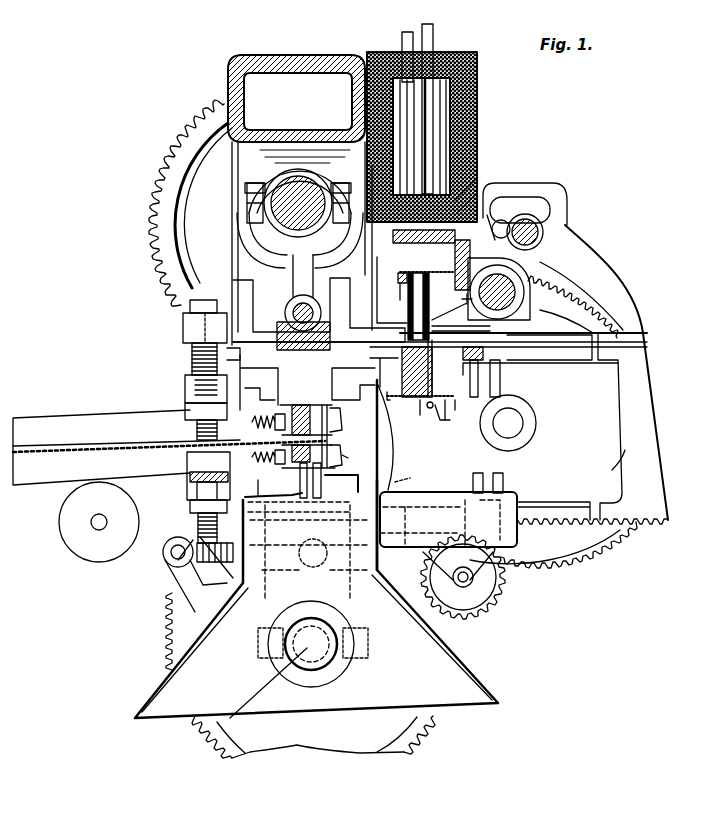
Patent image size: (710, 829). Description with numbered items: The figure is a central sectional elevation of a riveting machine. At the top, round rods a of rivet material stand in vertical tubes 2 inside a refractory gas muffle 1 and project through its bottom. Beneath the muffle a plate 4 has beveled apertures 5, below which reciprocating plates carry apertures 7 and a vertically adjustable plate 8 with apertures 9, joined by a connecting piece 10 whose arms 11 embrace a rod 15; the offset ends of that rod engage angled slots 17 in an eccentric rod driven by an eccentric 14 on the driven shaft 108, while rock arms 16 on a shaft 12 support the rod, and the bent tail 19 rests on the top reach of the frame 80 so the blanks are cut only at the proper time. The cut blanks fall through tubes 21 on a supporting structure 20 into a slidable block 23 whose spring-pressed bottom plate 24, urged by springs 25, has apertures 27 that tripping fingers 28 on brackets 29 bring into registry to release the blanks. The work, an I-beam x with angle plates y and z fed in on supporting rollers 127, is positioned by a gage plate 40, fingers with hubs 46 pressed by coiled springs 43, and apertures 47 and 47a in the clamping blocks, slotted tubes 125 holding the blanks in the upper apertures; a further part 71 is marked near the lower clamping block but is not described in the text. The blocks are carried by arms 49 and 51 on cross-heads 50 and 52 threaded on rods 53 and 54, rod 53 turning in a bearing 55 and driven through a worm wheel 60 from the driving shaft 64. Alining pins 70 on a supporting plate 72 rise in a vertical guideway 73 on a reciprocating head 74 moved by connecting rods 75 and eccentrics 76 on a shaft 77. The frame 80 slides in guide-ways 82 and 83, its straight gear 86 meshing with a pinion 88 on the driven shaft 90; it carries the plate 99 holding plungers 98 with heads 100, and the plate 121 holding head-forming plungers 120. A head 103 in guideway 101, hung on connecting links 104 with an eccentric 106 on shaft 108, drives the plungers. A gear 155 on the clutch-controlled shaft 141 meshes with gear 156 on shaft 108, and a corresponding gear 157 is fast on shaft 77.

The gas muffle 1 is at (460, 165).
The tubes 2 is at (402, 39).
The rods a is at (440, 155).
The plate 4 is at (525, 197).
The apertures 5 is at (420, 335).
The apertures 7 is at (420, 245).
The plate 8 is at (395, 269).
The apertures 9 is at (446, 255).
The connecting piece 10 is at (452, 303).
The arms 11 is at (501, 218).
The shaft 12 is at (515, 292).
The eccentric 14 is at (240, 240).
The rod 15 is at (550, 222).
The rock arms 16 is at (530, 268).
The angled slots 17 is at (530, 200).
The tail 19 is at (630, 290).
The supporting structure 20 is at (400, 290).
The tubes 21 is at (430, 330).
The slidable block 23 is at (402, 358).
The bottom plate 24 is at (402, 419).
The springs 25 is at (415, 411).
The apertures 27 is at (442, 424).
The tripping fingers 28 is at (451, 411).
The brackets 29 is at (467, 406).
The gage plate 40 is at (355, 458).
The coiled springs 43 is at (241, 427).
The hubs 46 is at (285, 395).
The apertures 47 is at (366, 475).
The apertures 47a is at (353, 381).
The arms 49 is at (187, 482).
The cross-head 50 is at (190, 510).
The arms 51 is at (185, 385).
The cross-head 52 is at (185, 410).
The screw-threaded rod 53 is at (222, 546).
The screw-threaded rod 54 is at (192, 358).
The bearing 55 is at (183, 325).
The worm wheel 60 is at (181, 538).
The driving shaft 64 is at (165, 562).
The alining pins 70 is at (300, 490).
The spring 71 is at (331, 452).
The supporting plate 72 is at (300, 519).
The vertical guideway 73 is at (412, 478).
The reciprocating head 74 is at (300, 580).
The connecting rods 75 is at (268, 612).
The eccentrics 76 is at (250, 672).
The shaft 77 is at (230, 718).
The frame 80 is at (600, 478).
The guide-way 82 is at (192, 350).
The guide-way 83 is at (430, 500).
The straight gear 86 is at (632, 530).
The pinion 88 is at (500, 598).
The driven shaft 90 is at (470, 595).
The plungers 98 is at (500, 385).
The supporting plate 99 is at (480, 372).
The heads 100 is at (512, 335).
The guide-way 101 is at (245, 258).
The head 103 is at (285, 300).
The connecting links 104 is at (320, 262).
The eccentric 106 is at (247, 210).
The driven shaft 108 is at (270, 188).
The plungers 120 is at (503, 470).
The supporting plate 121 is at (535, 505).
The tubes 125 is at (304, 409).
The supporting rollers 127 is at (59, 531).
The shaft 141 is at (518, 430).
The gear 155 is at (545, 556).
The gear 156 is at (160, 165).
The gear 157 is at (430, 735).
The I-beam x is at (74, 448).
The angle plate y is at (342, 437).
The angle plate z is at (345, 449).